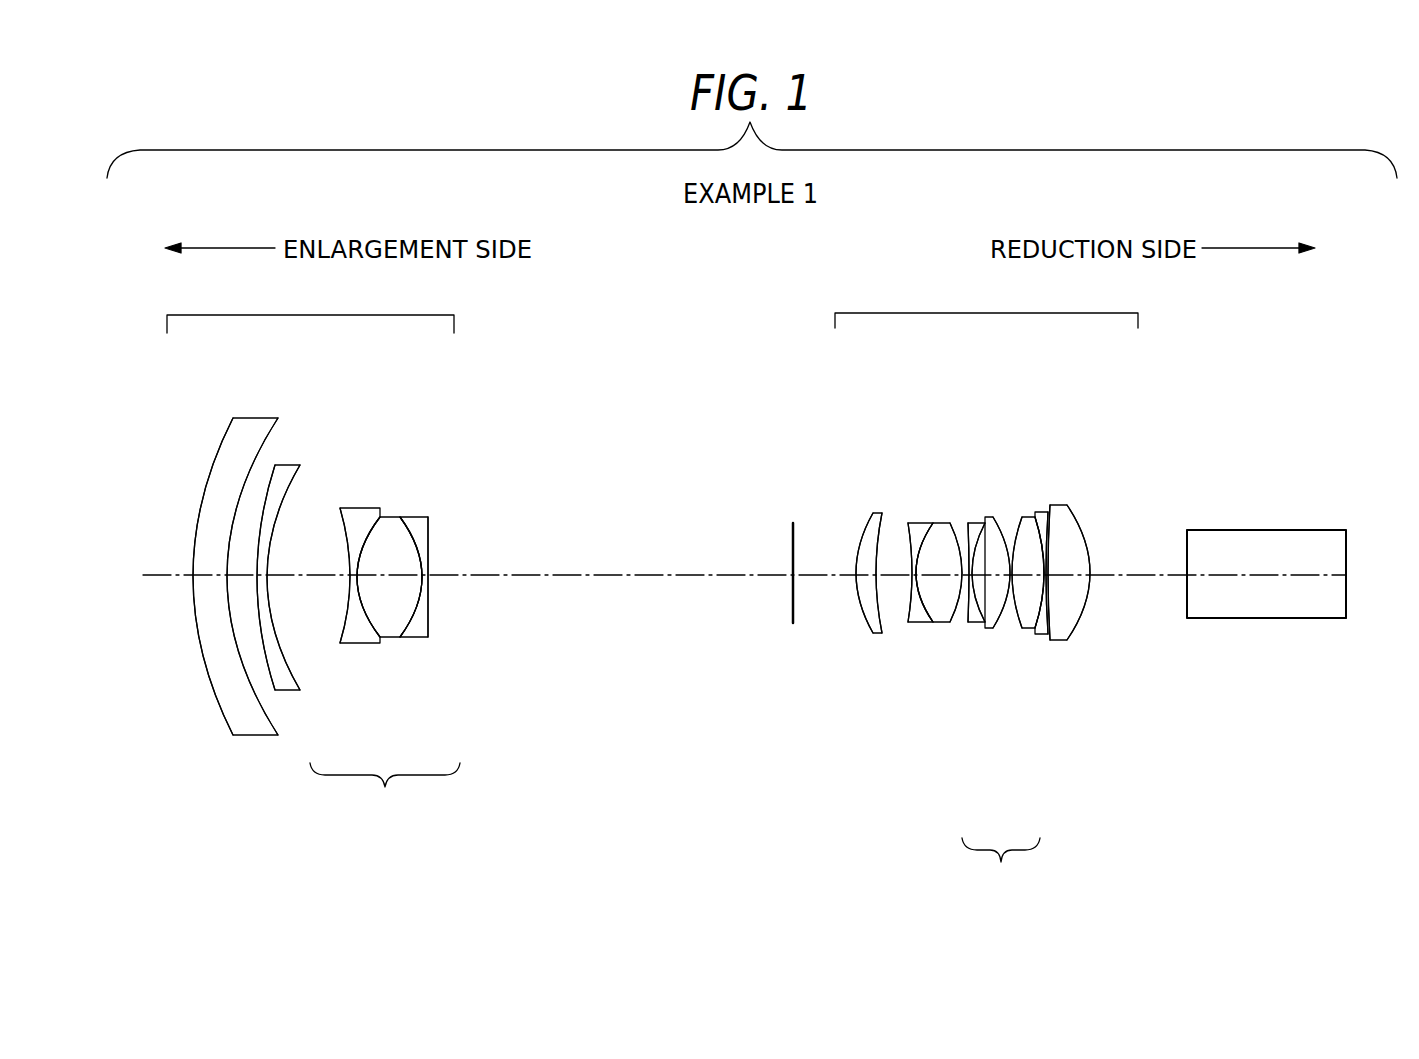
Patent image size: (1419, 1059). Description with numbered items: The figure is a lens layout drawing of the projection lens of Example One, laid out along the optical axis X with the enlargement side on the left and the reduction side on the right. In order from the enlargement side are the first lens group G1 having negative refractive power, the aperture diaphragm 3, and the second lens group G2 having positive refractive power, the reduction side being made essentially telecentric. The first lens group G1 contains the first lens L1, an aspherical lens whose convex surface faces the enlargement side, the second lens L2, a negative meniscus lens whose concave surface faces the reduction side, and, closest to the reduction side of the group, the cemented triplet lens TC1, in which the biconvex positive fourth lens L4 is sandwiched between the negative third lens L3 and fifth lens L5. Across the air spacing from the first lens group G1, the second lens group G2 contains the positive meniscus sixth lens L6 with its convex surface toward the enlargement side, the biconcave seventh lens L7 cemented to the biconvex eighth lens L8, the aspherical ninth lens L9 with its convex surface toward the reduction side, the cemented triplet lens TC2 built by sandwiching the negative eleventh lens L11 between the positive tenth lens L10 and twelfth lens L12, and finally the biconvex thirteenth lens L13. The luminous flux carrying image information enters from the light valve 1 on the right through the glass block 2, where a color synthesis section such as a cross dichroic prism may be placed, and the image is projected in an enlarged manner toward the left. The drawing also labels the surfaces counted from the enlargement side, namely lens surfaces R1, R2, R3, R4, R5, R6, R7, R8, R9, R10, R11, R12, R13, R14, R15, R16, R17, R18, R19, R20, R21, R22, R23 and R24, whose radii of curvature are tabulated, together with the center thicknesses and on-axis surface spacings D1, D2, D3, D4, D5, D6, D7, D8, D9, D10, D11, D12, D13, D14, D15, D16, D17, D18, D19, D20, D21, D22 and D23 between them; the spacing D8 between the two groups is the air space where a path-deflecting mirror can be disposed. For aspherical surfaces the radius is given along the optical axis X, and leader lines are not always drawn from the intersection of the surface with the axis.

The light valve 1 is at (1347, 586).
The glass block 2 is at (1277, 530).
The aperture diaphragm 3 is at (791, 600).
The optical axis X is at (634, 580).
The first lens group G1 is at (310, 308).
The second lens group G2 is at (986, 306).
The cemented triplet lens TC1 is at (385, 793).
The cemented triplet lens TC2 is at (1001, 867).
The first lens L1 is at (218, 705).
The second lens L2 is at (296, 692).
The third lens L3 is at (362, 645).
The fourth lens L4 is at (385, 640).
The fifth lens L5 is at (430, 640).
The sixth lens L6 is at (877, 633).
The seventh lens L7 is at (915, 624).
The eighth lens L8 is at (940, 624).
The ninth lens L9 is at (975, 624).
The tenth lens L10 is at (988, 630).
The eleventh lens L11 is at (1025, 630).
The twelfth lens L12 is at (1050, 636).
The thirteenth lens L13 is at (1070, 642).
The lens surface R1 is at (195, 548).
The lens surface R2 is at (233, 502).
The lens surface R3 is at (263, 498).
The lens surface R4 is at (270, 560).
The lens surface R5 is at (344, 565).
The lens surface R6 is at (370, 535).
The lens surface R7 is at (412, 530).
The lens surface R8 is at (432, 552).
The lens surface R9 is at (791, 557).
The lens surface R10 is at (862, 548).
The lens surface R11 is at (878, 550).
The lens surface R12 is at (912, 540).
The lens surface R13 is at (918, 548).
The lens surface R14 is at (956, 545).
The lens surface R15 is at (968, 540).
The lens surface R16 is at (973, 555).
The lens surface R17 is at (1003, 540).
The lens surface R18 is at (1015, 548).
The lens surface R19 is at (1040, 545).
The lens surface R20 is at (1047, 552).
The lens surface R21 is at (1050, 560).
The lens surface R22 is at (1086, 553).
The lens surface R23 is at (1186, 544).
The lens surface R24 is at (1348, 546).
The on-axis surface spacing D1 is at (212, 580).
The on-axis surface spacing D2 is at (243, 580).
The on-axis surface spacing D3 is at (263, 580).
The on-axis surface spacing D4 is at (303, 599).
The on-axis surface spacing D5 is at (352, 580).
The on-axis surface spacing D6 is at (390, 580).
The on-axis surface spacing D7 is at (425, 580).
The on-axis surface spacing D8 is at (578, 555).
The on-axis surface spacing D9 is at (825, 580).
The on-axis surface spacing D10 is at (866, 580).
The on-axis surface spacing D11 is at (895, 580).
The on-axis surface spacing D12 is at (912, 575).
The on-axis surface spacing D13 is at (940, 580).
The on-axis surface spacing D14 is at (965, 580).
The on-axis surface spacing D15 is at (970, 580).
The on-axis surface spacing D16 is at (990, 580).
The on-axis surface spacing D17 is at (1011, 580).
The on-axis surface spacing D18 is at (1028, 580).
The on-axis surface spacing D19 is at (1046, 580).
The on-axis surface spacing D20 is at (1049, 580).
The on-axis surface spacing D21 is at (1069, 580).
The on-axis surface spacing D22 is at (1149, 557).
The on-axis surface spacing D23 is at (1242, 580).